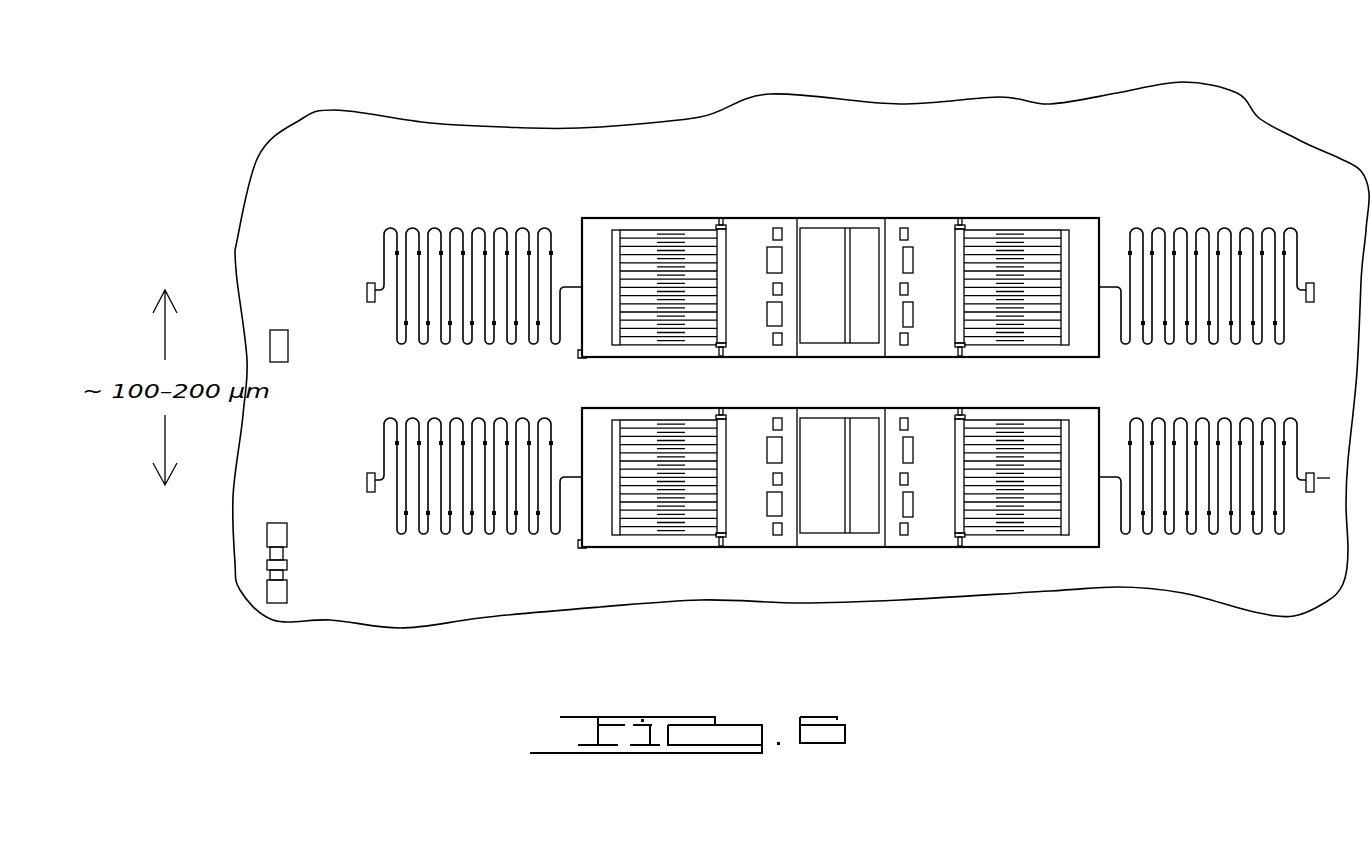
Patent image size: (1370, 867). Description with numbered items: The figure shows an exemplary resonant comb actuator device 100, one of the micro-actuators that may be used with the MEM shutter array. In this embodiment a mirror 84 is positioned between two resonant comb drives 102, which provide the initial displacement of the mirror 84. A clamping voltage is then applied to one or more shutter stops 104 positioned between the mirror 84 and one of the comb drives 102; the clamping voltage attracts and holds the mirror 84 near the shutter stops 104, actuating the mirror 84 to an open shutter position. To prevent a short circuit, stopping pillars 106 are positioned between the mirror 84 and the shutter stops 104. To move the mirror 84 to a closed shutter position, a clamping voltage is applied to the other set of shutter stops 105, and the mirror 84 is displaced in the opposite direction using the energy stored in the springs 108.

The resonant comb actuator device 100 is at (424, 105).
The springs 108 is at (477, 216).
The comb drives 102 is at (643, 214).
The mirror 84 is at (843, 212).
The shutter stops 105 is at (767, 255).
The stopping pillars 106 is at (908, 229).
The shutter stops 104 is at (919, 236).